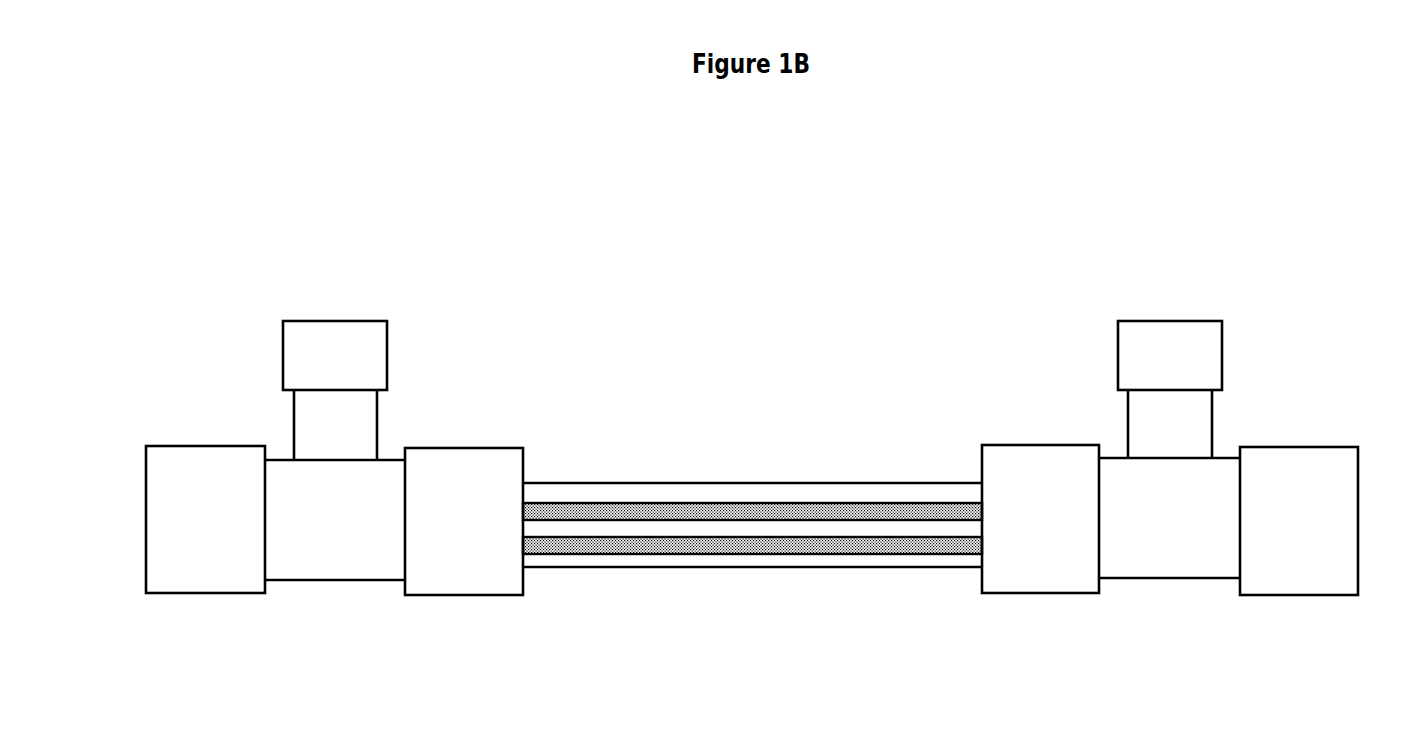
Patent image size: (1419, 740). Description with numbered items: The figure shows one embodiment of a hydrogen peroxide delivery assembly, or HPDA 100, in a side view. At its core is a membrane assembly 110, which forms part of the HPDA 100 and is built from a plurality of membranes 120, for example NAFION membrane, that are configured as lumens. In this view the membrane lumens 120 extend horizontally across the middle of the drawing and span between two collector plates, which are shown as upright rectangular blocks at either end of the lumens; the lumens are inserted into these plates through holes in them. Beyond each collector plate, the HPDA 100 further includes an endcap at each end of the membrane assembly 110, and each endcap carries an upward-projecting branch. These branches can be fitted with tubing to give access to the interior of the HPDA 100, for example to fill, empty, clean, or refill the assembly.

The hydrogen peroxide delivery assembly 100 is at (478, 238).
The membrane assembly 110 is at (765, 455).
The membranes 120 is at (847, 543).